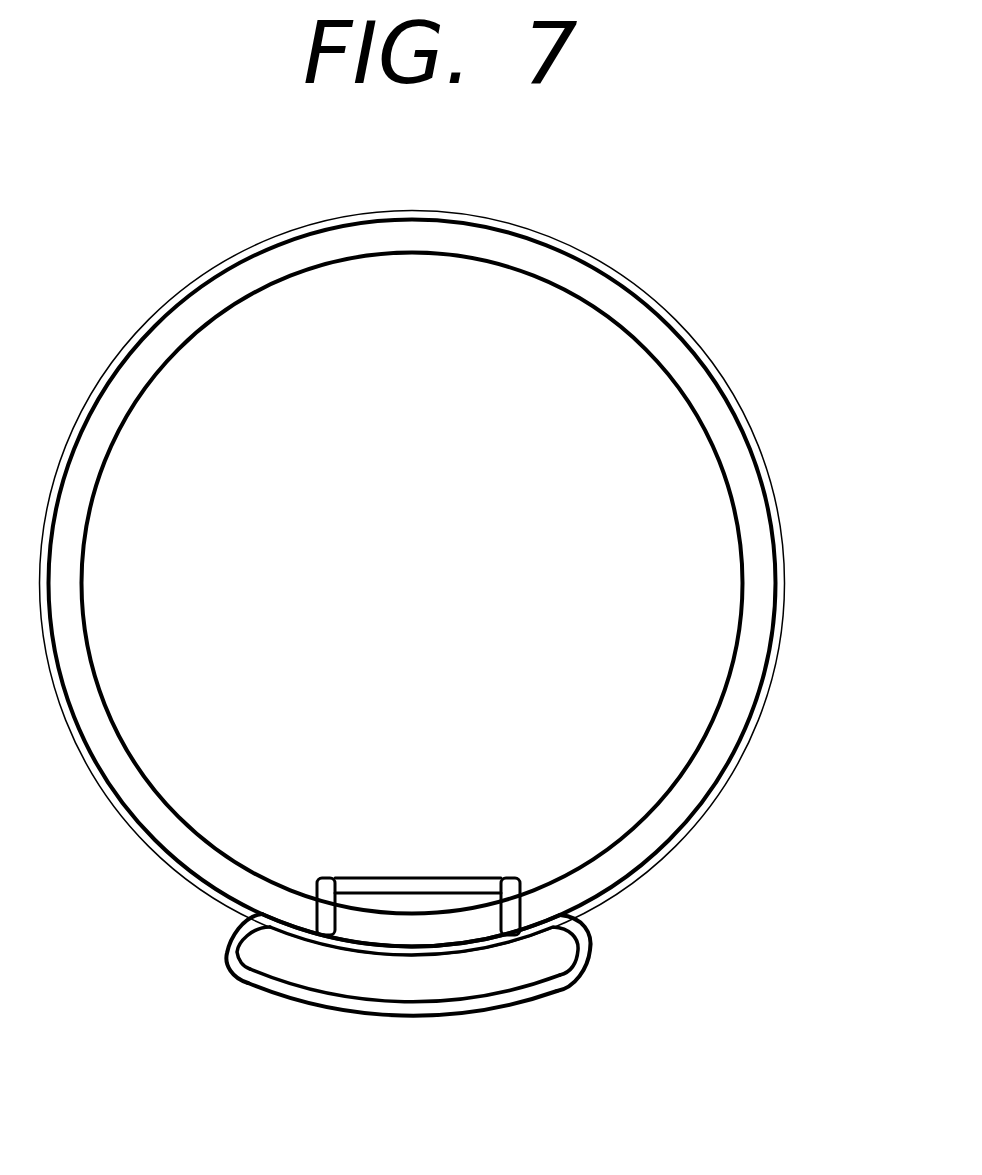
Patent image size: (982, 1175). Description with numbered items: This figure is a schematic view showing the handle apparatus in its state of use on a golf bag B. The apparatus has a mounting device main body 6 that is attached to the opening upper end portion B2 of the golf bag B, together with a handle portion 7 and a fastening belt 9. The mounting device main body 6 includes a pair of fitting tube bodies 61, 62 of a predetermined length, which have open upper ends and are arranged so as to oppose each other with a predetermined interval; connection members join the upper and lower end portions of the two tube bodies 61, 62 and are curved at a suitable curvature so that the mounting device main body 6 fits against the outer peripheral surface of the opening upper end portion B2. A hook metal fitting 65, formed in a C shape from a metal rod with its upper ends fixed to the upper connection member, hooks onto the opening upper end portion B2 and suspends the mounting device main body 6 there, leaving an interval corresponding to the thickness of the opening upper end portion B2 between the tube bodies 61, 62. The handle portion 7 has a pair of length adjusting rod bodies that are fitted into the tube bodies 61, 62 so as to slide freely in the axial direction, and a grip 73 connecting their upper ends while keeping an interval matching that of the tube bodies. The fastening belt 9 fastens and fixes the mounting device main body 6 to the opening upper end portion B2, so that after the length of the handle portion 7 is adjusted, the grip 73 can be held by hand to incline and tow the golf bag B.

The golf bag B is at (650, 247).
The opening upper end portion B2 is at (732, 698).
The fastening belt 9 is at (749, 351).
The mounting device main body 6 is at (281, 1032).
The handle portion 7 is at (408, 1001).
The fitting tube body 61 is at (593, 962).
The fitting tube body 62 is at (227, 968).
The hook metal fitting 65 is at (363, 884).
The grip 73 is at (523, 973).